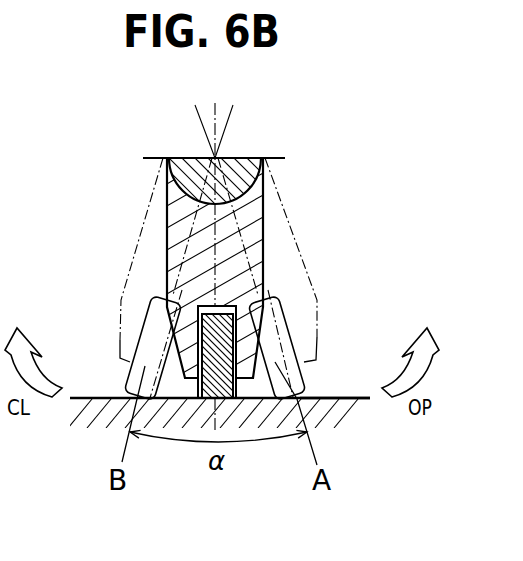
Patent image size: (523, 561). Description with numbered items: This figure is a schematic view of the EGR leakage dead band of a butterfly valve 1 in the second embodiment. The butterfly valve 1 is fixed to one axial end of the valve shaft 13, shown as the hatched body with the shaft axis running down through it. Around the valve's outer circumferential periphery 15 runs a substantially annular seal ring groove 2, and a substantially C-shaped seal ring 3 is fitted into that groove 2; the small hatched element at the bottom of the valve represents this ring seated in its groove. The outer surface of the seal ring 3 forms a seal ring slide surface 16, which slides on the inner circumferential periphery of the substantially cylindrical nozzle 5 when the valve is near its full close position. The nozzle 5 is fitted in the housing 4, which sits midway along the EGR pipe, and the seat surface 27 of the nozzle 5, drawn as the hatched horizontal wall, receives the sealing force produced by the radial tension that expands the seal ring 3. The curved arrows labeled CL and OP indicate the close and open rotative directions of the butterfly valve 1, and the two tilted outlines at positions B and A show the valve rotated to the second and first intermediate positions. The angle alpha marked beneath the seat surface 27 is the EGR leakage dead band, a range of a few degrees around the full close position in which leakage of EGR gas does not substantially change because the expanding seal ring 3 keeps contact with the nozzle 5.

The butterfly valve 1 is at (172, 222).
The seal ring groove 2 is at (197, 307).
The seal ring 3 is at (200, 345).
The housing 4 is at (331, 406).
The nozzle 5 is at (213, 413).
The valve shaft 13 is at (233, 157).
The outer circumferential periphery 15 is at (170, 353).
The seal ring slide surface 16 is at (207, 399).
The seat surface 27 is at (330, 398).